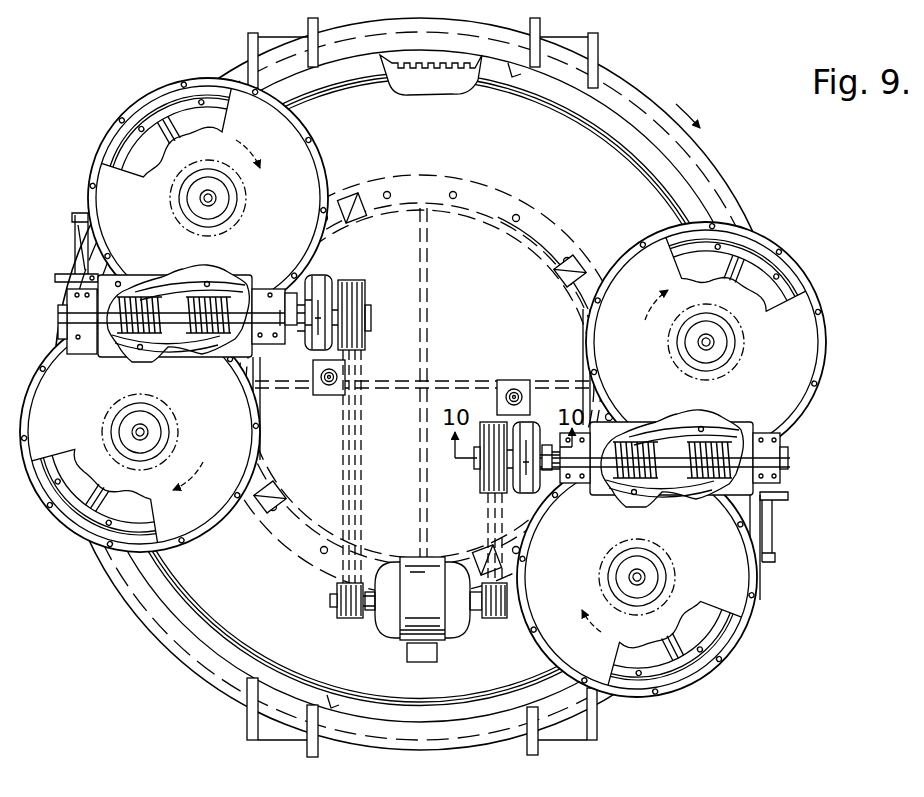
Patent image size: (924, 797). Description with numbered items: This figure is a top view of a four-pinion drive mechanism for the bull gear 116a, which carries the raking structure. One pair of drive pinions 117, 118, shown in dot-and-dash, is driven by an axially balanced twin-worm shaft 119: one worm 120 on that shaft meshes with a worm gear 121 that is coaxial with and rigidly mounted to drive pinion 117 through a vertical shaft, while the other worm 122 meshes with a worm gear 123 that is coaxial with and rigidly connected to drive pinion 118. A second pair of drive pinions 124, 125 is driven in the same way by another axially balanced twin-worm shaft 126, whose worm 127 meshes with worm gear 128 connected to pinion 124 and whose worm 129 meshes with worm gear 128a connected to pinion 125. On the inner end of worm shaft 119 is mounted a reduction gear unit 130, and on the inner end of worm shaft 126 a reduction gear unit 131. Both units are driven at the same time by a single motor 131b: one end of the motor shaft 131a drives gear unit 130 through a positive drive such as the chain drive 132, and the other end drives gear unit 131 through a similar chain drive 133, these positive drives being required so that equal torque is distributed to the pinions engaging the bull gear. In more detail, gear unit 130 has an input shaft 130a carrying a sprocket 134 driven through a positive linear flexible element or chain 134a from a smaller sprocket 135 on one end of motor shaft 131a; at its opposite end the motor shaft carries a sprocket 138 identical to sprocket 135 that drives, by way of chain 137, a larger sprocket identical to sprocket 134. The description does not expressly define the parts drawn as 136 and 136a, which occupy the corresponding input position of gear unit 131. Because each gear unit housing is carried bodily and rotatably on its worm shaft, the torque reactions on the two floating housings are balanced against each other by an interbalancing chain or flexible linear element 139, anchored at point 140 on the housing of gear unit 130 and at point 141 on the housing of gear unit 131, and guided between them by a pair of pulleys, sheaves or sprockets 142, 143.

The bull gear 116a is at (400, 70).
The drive pinion 117 is at (180, 432).
The drive pinion 118 is at (247, 208).
The twin-worm shaft 119 is at (172, 330).
The worm 120 is at (137, 298).
The worm gear 121 is at (130, 350).
The worm 122 is at (215, 335).
The worm gear 123 is at (172, 285).
The drive pinion 124 is at (746, 340).
The drive pinion 125 is at (674, 562).
The twin-worm shaft 126 is at (672, 453).
The worm 127 is at (718, 480).
The worm gear 128 is at (722, 432).
The worm gear 128a is at (620, 500).
The worm 129 is at (627, 445).
The reduction gear unit 130 is at (330, 269).
The input shaft 130a is at (364, 320).
The reduction gear unit 131 is at (532, 497).
The motor shaft 131a is at (331, 600).
The motor 131b is at (395, 637).
The chain drive 132 is at (338, 451).
The chain drive 133 is at (484, 530).
The sprocket 134 is at (357, 282).
The chain 134a is at (352, 423).
The sprocket 135 is at (352, 620).
The pulley 136 is at (487, 423).
The pulley hub 136a is at (480, 466).
The chain 137 is at (497, 548).
The sprocket 138 is at (492, 621).
The interbalancing element 139 is at (312, 372).
The anchoring point 140 is at (312, 327).
The anchoring point 141 is at (541, 440).
The pulley 142 is at (322, 395).
The pulley 143 is at (513, 385).